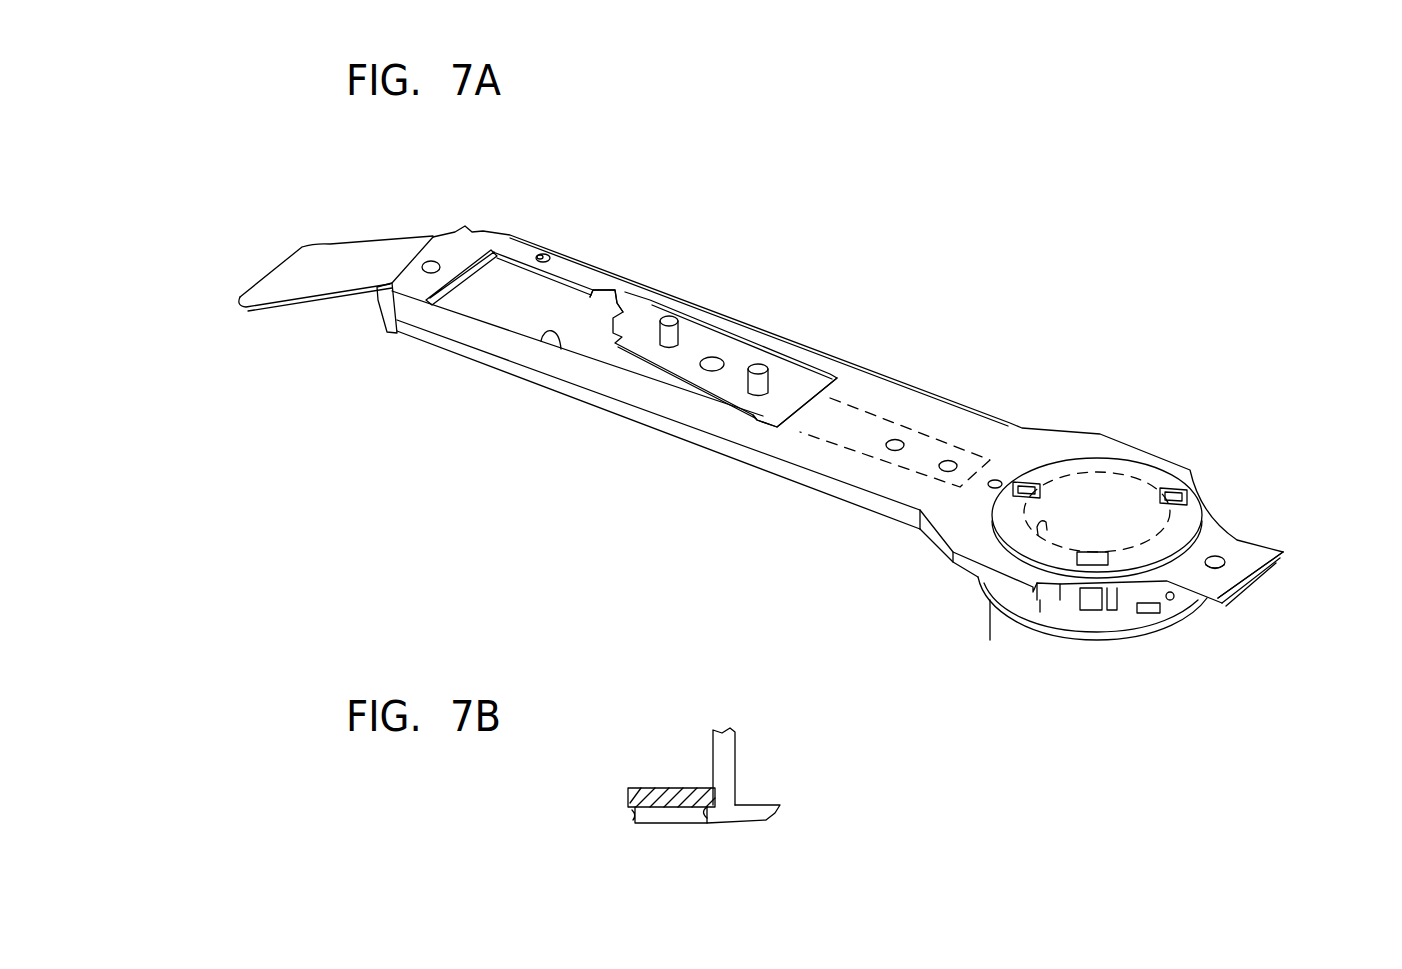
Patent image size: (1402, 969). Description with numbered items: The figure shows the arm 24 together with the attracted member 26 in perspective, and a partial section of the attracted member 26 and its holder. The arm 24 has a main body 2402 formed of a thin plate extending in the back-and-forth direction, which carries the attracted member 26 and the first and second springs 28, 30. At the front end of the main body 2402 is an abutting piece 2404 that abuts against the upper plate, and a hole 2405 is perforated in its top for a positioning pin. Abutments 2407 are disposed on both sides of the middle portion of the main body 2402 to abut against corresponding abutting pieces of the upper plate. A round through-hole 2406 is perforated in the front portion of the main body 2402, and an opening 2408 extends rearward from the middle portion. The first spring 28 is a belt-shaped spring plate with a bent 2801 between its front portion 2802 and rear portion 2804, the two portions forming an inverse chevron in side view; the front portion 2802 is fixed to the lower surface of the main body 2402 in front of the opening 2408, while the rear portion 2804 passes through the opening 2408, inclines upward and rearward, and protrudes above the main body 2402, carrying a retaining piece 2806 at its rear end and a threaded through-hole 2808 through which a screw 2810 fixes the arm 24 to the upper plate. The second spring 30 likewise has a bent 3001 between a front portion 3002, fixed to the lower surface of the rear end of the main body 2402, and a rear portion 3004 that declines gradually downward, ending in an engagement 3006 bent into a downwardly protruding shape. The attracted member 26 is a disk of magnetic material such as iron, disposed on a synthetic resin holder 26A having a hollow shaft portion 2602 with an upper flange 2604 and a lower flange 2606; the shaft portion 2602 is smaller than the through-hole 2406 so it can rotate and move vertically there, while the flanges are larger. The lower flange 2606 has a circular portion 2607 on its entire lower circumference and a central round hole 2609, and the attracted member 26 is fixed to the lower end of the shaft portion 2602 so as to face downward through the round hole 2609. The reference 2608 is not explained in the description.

In FIG. 7A, the arm 24 is at (872, 520).
In FIG. 7A, the main body 2402 is at (833, 458).
In FIG. 7A, the abutting piece 2404 is at (1255, 577).
In FIG. 7A, the hole 2405 is at (1215, 558).
In FIG. 7A, the through-hole 2406 is at (1038, 535).
In FIG. 7A, the abutments 2407 is at (750, 333).
In FIG. 7A, the opening 2408 is at (553, 348).
In FIG. 7A, the attracted member 26 is at (1151, 470).
In FIG. 7B, the attracted member 26 is at (658, 797).
In FIG. 7A, the holder 26A is at (1143, 478).
In FIG. 7A, the shaft portion 2602 is at (1120, 594).
In FIG. 7B, the shaft portion 2602 is at (735, 765).
In FIG. 7A, the upper flange 2604 is at (1190, 520).
In FIG. 7A, the lower flange 2606 is at (1080, 643).
In FIG. 7B, the lower flange 2606 is at (670, 823).
In FIG. 7B, the circular portion 2607 is at (775, 813).
In FIG. 7A, the hook 2608 is at (1060, 603).
In FIG. 7B, the round hole 2609 is at (697, 817).
In FIG. 7A, the first spring 28 is at (750, 270).
In FIG. 7A, the bent 2801 is at (773, 380).
In FIG. 7A, the front portion 2802 is at (920, 430).
In FIG. 7A, the rear portion 2804 is at (693, 343).
In FIG. 7A, the retaining piece 2806 is at (605, 292).
In FIG. 7A, the threaded through-hole 2808 is at (666, 316).
In FIG. 7A, the screw 2810 is at (660, 303).
In FIG. 7A, the second spring 30 is at (308, 329).
In FIG. 7A, the bent 3001 is at (378, 292).
In FIG. 7A, the front portion 3002 is at (440, 312).
In FIG. 7A, the rear portion 3004 is at (345, 268).
In FIG. 7A, the engagement 3006 is at (296, 320).